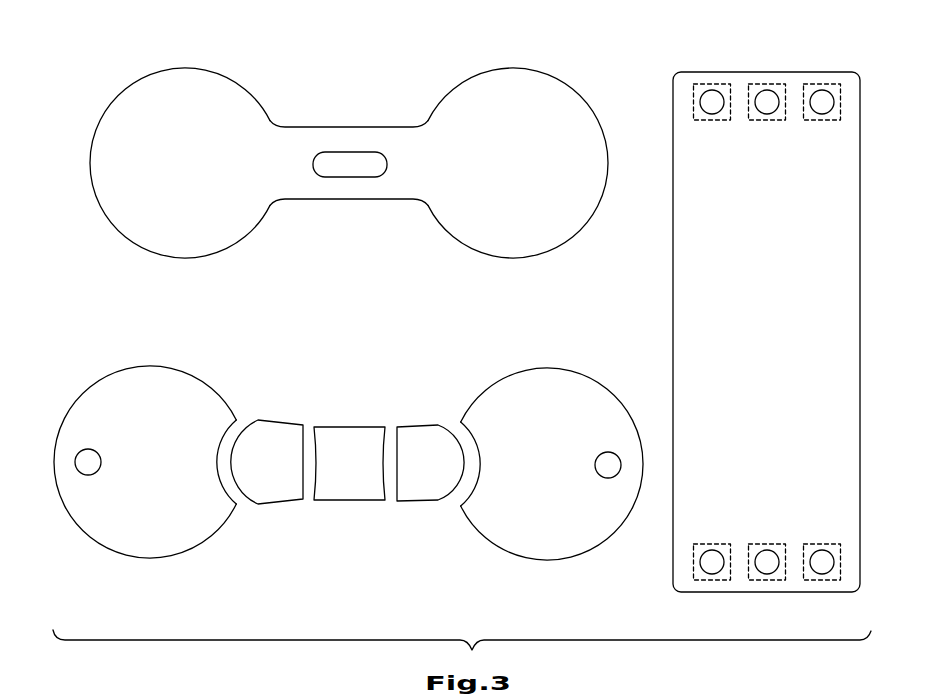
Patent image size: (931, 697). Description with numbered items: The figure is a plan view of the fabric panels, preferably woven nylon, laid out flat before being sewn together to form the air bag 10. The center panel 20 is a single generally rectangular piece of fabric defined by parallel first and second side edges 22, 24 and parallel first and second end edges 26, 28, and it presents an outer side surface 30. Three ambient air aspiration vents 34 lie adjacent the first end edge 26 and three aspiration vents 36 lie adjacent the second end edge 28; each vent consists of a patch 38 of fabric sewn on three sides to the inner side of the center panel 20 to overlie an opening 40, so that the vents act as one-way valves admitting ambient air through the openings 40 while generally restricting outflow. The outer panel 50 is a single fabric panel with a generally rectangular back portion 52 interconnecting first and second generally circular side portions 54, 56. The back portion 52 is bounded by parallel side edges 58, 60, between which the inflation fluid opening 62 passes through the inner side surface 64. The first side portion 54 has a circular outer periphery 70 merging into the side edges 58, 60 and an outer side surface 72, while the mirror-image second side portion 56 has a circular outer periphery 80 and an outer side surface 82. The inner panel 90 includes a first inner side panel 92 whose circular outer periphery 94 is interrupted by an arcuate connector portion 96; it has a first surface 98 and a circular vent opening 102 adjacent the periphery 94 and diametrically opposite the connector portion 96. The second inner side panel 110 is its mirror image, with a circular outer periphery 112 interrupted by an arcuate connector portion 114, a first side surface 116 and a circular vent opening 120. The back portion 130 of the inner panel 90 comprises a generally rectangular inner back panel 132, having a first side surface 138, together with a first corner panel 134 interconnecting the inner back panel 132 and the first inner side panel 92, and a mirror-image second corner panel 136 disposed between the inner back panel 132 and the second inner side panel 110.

The air bag 10 is at (48, 317).
The center panel 20 is at (885, 348).
The first side edge 22 is at (861, 186).
The second side edge 24 is at (672, 258).
The first end edge 26 is at (718, 72).
The second end edge 28 is at (723, 592).
The outer side surface 30 is at (830, 408).
The aspiration vents 34 is at (708, 142).
The aspiration vents 36 is at (807, 497).
The patch 38 is at (722, 83).
The opening 40 is at (712, 112).
The outer panel 50 is at (332, 38).
The back portion 52 is at (350, 188).
The first side portion 54 is at (128, 125).
The second side portion 56 is at (542, 112).
The side edge 58 is at (298, 127).
The side edge 60 is at (323, 200).
The inflation fluid opening 62 is at (347, 152).
The inner side surface 64 is at (412, 183).
The circular outer periphery 70 is at (92, 187).
The outer side surface 72 is at (183, 87).
The circular outer periphery 80 is at (553, 250).
The outer side surface 82 is at (565, 213).
The inner panel 90 is at (40, 475).
The first inner side panel 92 is at (75, 540).
The circular outer periphery 94 is at (90, 388).
The arcuate connector portion 96 is at (213, 482).
The first surface 98 is at (133, 527).
The circular vent opening 102 is at (97, 452).
The second inner side panel 110 is at (586, 570).
The circular outer periphery 112 is at (628, 518).
The arcuate connector portion 114 is at (480, 494).
The first side surface 116 is at (555, 393).
The circular vent opening 120 is at (605, 453).
The back portion 130 is at (344, 562).
The inner back panel 132 is at (344, 413).
The first corner panel 134 is at (280, 413).
The second corner panel 136 is at (435, 413).
The first side surface 138 is at (340, 483).